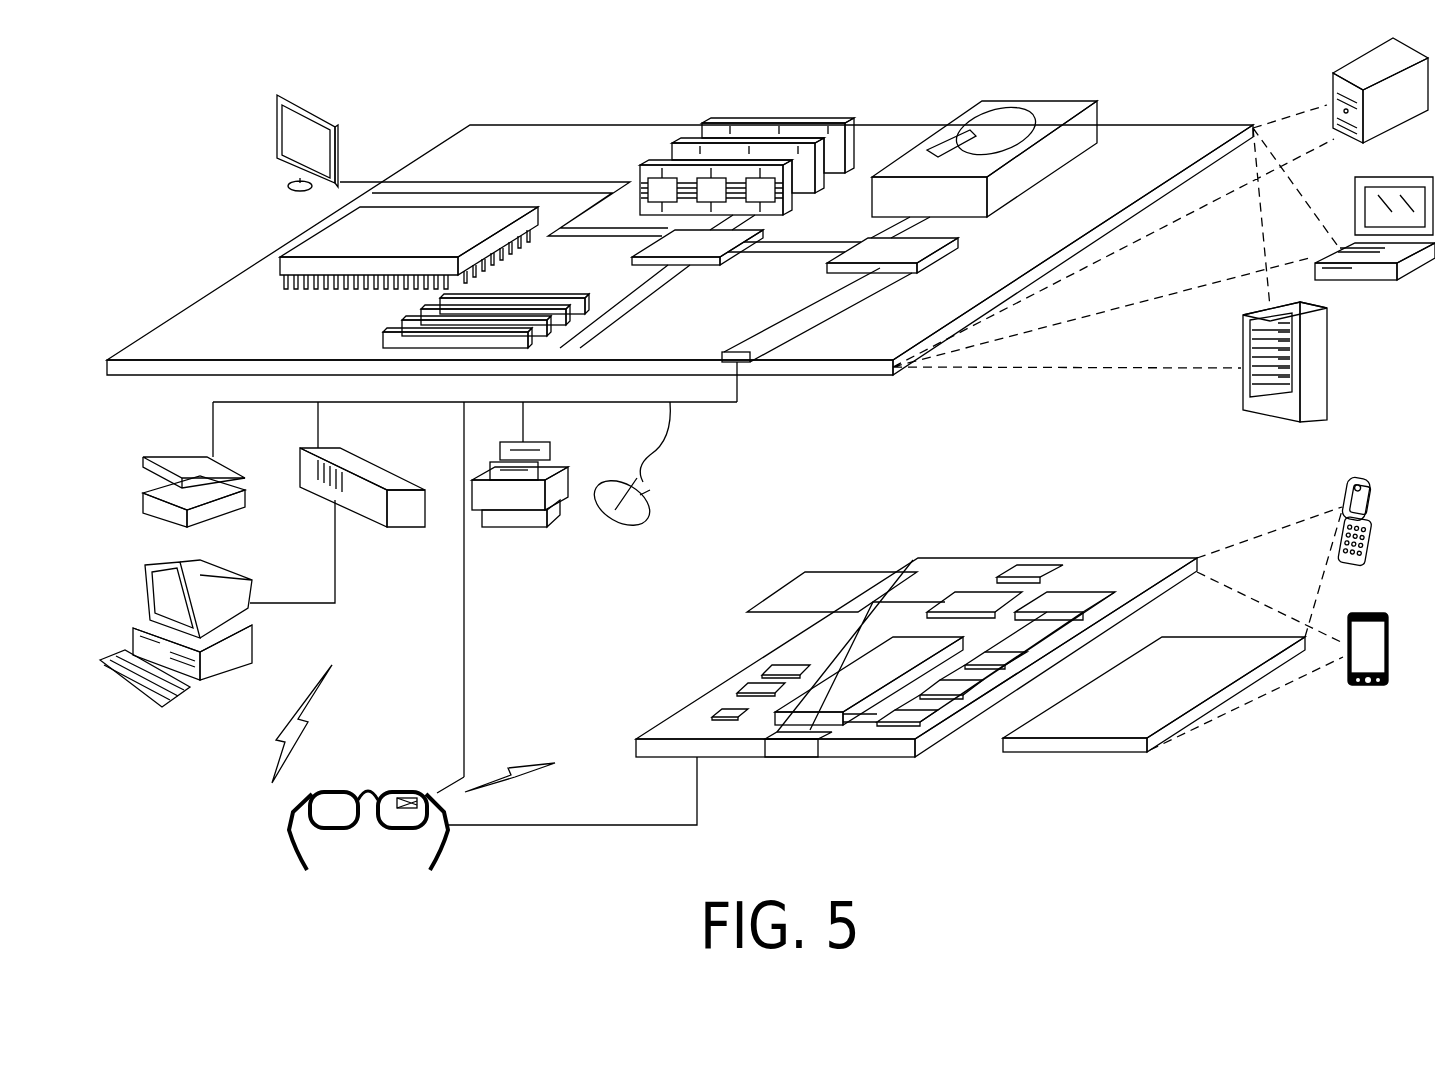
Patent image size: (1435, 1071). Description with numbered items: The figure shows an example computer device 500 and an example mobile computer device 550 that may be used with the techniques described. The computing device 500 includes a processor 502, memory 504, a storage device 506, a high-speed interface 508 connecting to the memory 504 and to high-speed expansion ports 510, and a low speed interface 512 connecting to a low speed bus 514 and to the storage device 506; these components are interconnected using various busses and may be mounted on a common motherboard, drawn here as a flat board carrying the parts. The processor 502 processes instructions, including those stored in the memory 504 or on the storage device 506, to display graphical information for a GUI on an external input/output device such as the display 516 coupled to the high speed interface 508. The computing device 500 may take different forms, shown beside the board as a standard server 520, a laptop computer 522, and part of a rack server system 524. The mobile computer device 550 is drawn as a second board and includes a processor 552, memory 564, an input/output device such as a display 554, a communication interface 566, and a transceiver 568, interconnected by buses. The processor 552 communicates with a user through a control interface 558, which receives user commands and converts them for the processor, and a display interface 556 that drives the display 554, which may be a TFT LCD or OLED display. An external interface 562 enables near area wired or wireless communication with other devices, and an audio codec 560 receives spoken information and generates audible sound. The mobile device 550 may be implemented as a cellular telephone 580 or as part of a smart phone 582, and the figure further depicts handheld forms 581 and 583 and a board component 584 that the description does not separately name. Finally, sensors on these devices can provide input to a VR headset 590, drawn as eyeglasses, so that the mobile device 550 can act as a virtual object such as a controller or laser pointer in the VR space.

The computing device 500 is at (421, 68).
The processor 502 is at (310, 237).
The memory 504 is at (783, 115).
The storage device 506 is at (1024, 96).
The high-speed interface 508 is at (712, 238).
The high-speed expansion ports 510 is at (412, 318).
The low speed interface 512 is at (862, 248).
The low speed bus 514 is at (745, 345).
The display 516 is at (283, 90).
The standard server 520 is at (1355, 67).
The laptop computer 522 is at (1413, 177).
The rack server system 524 is at (1330, 360).
The mobile computer device 550 is at (1242, 752).
The processor 552 is at (835, 690).
The display 554 is at (1195, 655).
The display interface 556 is at (920, 712).
The control interface 558 is at (958, 683).
The audio codec 560 is at (1000, 652).
The external interface 562 is at (793, 743).
The memory 564 is at (740, 697).
The communication interface 566 is at (975, 595).
The transceiver 568 is at (1073, 592).
The cellular telephone 580 is at (1033, 572).
The smartphone 581 is at (1358, 613).
The smart phone 582 is at (895, 572).
The mobile phone 583 is at (1355, 478).
The battery 584 is at (808, 572).
The VR headset 590 is at (462, 840).